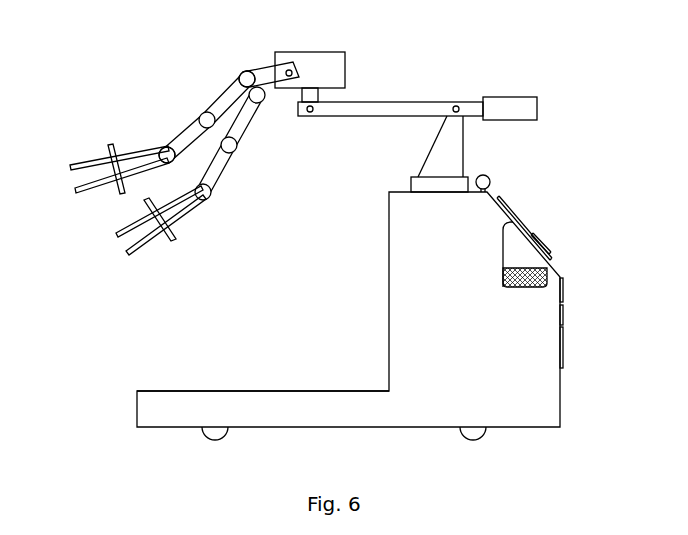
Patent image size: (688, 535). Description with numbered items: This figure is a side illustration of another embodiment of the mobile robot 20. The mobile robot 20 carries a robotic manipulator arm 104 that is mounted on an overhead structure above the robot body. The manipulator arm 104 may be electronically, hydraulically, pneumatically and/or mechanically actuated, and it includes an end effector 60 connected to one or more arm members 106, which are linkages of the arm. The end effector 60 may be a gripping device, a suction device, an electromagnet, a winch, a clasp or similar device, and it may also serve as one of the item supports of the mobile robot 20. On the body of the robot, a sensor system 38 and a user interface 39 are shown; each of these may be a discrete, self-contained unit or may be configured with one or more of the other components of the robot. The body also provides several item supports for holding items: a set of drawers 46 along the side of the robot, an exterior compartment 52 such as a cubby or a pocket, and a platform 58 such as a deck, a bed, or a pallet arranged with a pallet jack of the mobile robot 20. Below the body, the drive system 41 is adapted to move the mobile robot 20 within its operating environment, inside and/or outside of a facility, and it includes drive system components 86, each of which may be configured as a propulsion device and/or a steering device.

The mobile robot 20 is at (88, 67).
The robotic manipulator arm 104 is at (192, 110).
The arm members 106 is at (246, 72).
The end effector 60 is at (77, 196).
The sensor system 38 is at (497, 176).
The user interface 39 is at (528, 222).
The exterior compartment 52 is at (505, 247).
The drawer 46 is at (563, 290).
The platform 58 is at (248, 390).
The drive system components 86 is at (214, 440).
The drive system 41 is at (493, 436).